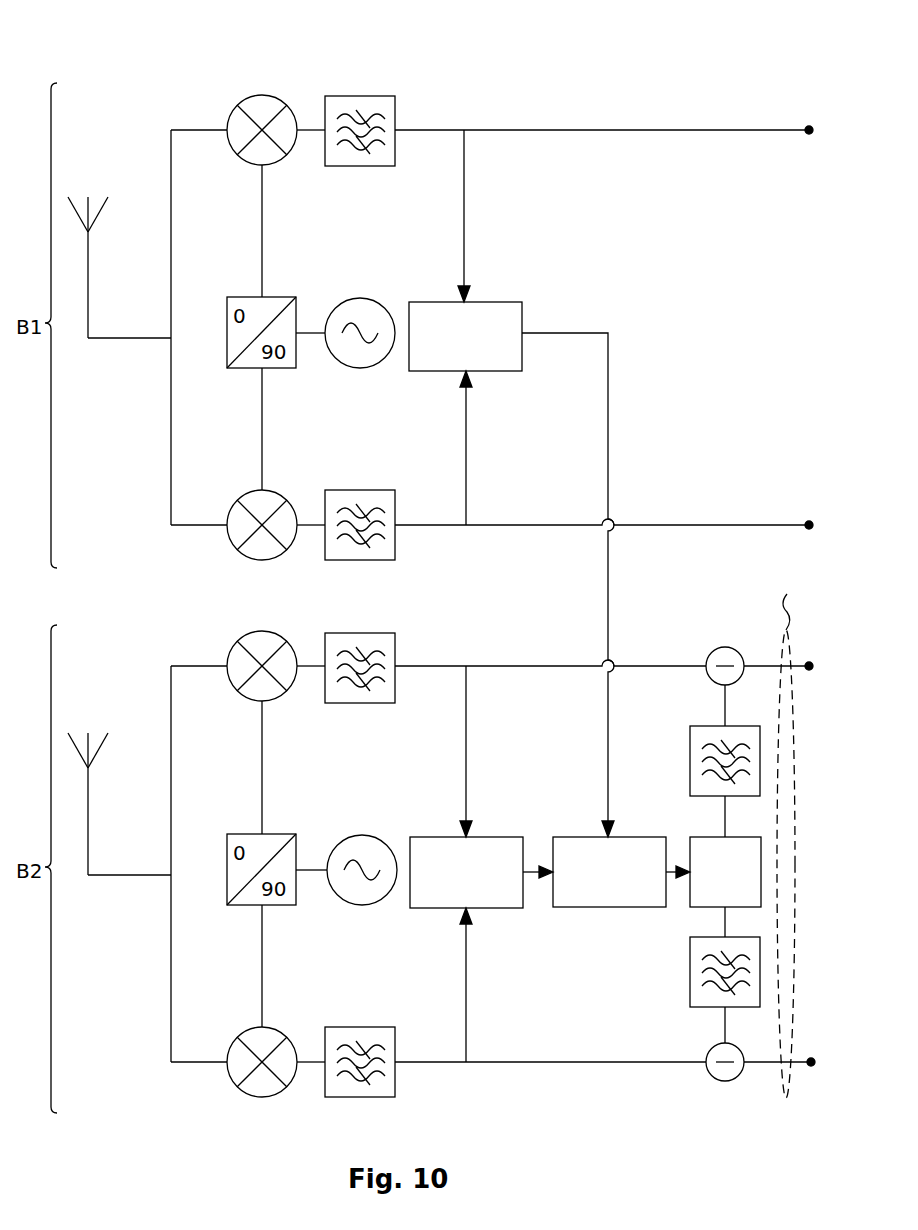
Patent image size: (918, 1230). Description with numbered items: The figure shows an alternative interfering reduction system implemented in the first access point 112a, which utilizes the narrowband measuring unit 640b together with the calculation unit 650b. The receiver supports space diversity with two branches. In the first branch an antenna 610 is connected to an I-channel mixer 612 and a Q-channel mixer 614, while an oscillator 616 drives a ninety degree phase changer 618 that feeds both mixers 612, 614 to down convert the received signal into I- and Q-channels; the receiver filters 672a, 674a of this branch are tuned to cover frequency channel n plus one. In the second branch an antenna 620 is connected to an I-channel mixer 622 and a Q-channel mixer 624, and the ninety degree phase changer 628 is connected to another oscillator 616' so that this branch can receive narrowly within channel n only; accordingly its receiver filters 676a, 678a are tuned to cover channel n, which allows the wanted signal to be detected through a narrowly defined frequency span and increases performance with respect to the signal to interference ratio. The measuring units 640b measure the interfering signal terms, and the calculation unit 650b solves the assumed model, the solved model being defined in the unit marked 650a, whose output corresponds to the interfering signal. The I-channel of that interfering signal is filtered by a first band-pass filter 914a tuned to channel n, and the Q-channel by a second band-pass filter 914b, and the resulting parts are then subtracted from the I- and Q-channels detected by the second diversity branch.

The first access point 112a is at (132, 76).
The antenna 610 is at (137, 340).
The I-channel mixer 612 is at (272, 155).
The Q-channel mixer 614 is at (275, 494).
The oscillator 616 is at (364, 358).
The oscillator 616' is at (370, 896).
The 90° phase changer 618 is at (243, 369).
The antenna 620 is at (137, 877).
The I-channel mixer 622 is at (272, 691).
The Q-channel mixer 624 is at (275, 1030).
The 90° phase changer 628 is at (243, 906).
The measuring unit 640b is at (466, 605).
The calculation unit 650a is at (725, 872).
The calculation unit 650b is at (609, 872).
The receiver filter 672a is at (368, 100).
The receiver filter 674a is at (380, 498).
The receiver filter 676a is at (368, 638).
The receiver filter 678a is at (376, 1034).
The first band-pass filter 914a is at (690, 758).
The second band-pass filter 914b is at (690, 968).